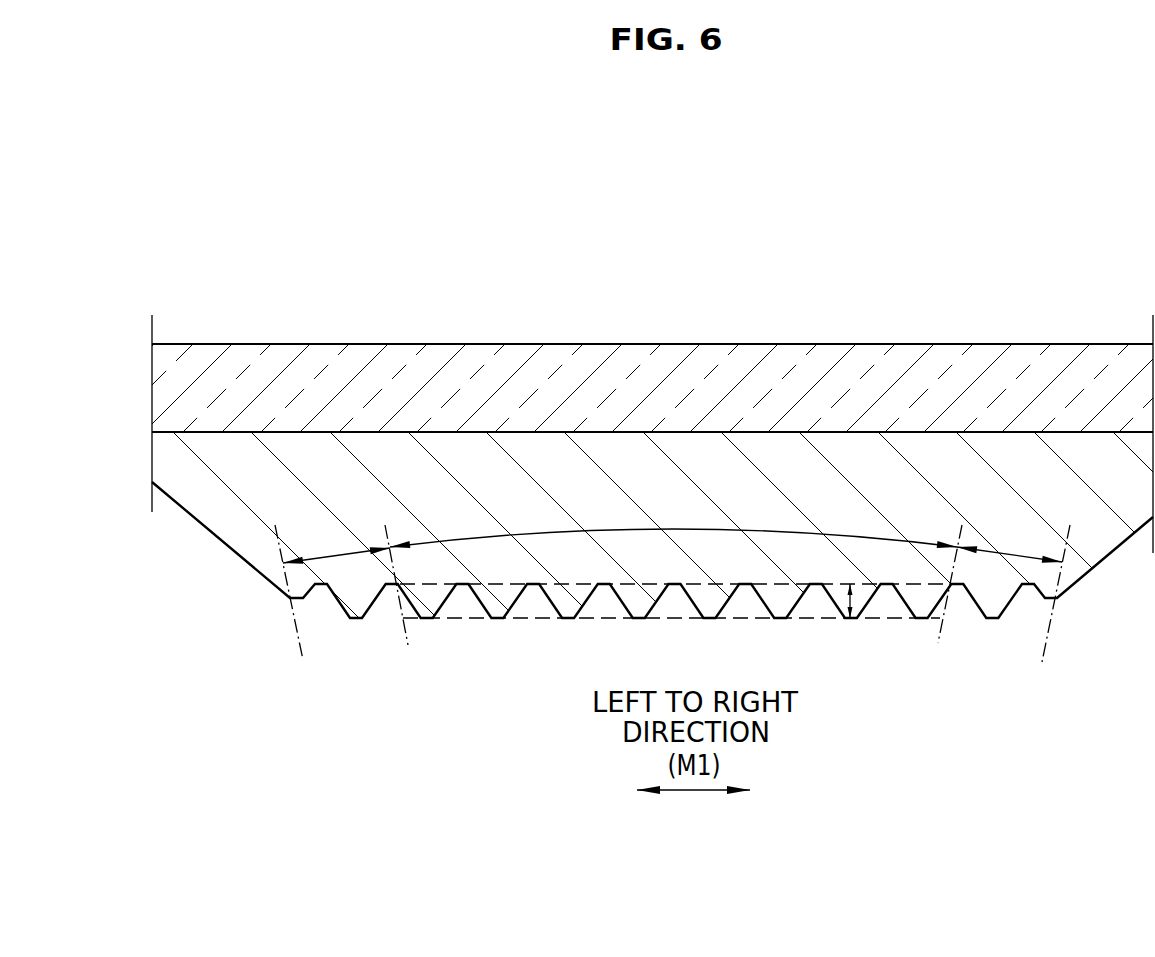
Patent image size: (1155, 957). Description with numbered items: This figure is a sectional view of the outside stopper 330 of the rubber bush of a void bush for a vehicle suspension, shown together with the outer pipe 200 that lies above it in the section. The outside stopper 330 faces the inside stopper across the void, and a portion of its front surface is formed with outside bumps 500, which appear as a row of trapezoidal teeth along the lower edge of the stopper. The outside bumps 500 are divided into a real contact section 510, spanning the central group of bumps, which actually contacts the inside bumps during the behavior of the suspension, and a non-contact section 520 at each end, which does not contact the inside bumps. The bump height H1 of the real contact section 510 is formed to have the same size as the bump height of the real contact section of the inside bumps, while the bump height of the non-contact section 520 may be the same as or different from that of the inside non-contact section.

The outer pipe 200 is at (766, 372).
The outside stopper 330 is at (585, 475).
The outside bumps 500 is at (493, 602).
The real contact section 510 is at (670, 530).
The non-contact section 520 is at (332, 556).
The bump height H1 is at (851, 601).